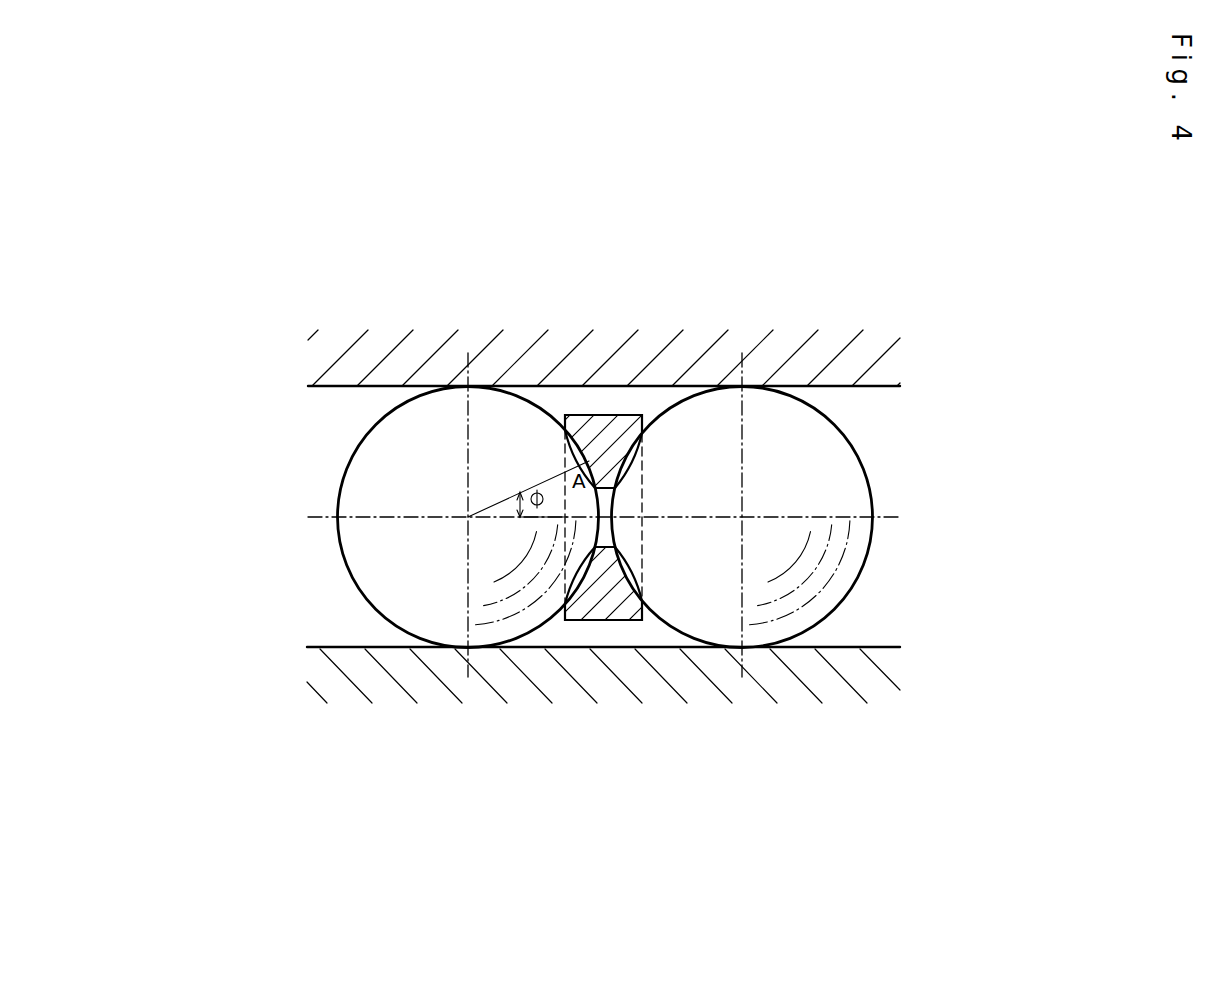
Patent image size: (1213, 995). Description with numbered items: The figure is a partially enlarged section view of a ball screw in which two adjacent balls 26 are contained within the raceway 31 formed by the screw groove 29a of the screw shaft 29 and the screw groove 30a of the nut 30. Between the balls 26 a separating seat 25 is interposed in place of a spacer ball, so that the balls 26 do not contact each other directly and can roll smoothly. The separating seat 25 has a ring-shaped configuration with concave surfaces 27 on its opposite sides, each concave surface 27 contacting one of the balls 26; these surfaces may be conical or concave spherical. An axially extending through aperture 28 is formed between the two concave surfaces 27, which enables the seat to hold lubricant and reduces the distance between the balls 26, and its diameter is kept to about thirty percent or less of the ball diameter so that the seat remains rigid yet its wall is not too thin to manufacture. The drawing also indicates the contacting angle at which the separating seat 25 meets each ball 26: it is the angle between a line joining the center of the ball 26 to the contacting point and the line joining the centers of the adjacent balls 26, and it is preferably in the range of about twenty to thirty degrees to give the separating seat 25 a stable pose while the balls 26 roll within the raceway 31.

The separating seat 25 is at (602, 521).
The ball 26 is at (357, 483).
The concave surface 27 is at (570, 462).
The through aperture 28 is at (608, 547).
The screw shaft 29 is at (603, 696).
The screw groove 29a is at (357, 645).
The nut 30 is at (604, 339).
The screw groove 30a is at (358, 391).
The raceway 31 is at (330, 592).